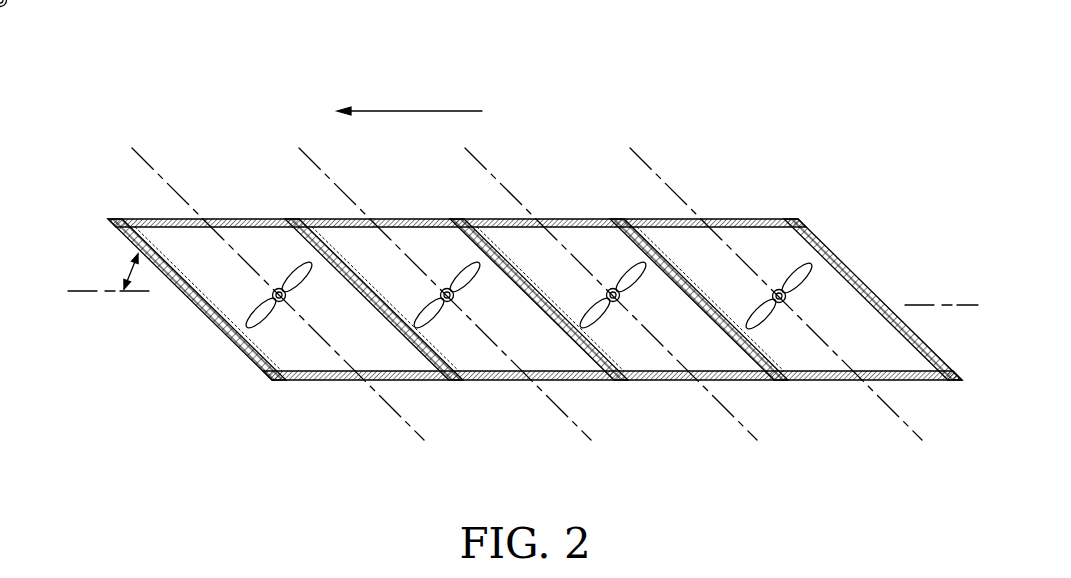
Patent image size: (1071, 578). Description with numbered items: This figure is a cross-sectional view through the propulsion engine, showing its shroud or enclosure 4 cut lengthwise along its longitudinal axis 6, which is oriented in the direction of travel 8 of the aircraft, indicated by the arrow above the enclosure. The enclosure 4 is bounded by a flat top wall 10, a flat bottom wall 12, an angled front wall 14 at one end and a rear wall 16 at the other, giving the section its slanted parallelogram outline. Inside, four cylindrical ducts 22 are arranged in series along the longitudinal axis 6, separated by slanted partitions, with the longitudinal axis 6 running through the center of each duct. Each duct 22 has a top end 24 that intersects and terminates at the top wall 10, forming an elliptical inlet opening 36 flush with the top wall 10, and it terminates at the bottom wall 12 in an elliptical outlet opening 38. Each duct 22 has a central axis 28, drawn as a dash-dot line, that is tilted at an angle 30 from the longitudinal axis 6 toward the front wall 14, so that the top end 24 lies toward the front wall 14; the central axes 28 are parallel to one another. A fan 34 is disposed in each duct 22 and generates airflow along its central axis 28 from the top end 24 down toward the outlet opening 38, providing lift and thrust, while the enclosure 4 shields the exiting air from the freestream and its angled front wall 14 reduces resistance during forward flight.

The enclosure 4 is at (834, 237).
The longitudinal axis 6 is at (90, 296).
The direction of travel 8 is at (405, 110).
The top wall 10 is at (570, 218).
The bottom wall 12 is at (826, 382).
The front wall 14 is at (218, 322).
The rear wall 16 is at (875, 288).
The cylindrical duct 22 is at (242, 217).
The top end 24 is at (148, 217).
The central axis 28 is at (400, 414).
The angle 30 is at (128, 266).
The fan 34 is at (449, 303).
The elliptical inlet opening 36 is at (723, 218).
The elliptical outlet opening 38 is at (905, 382).